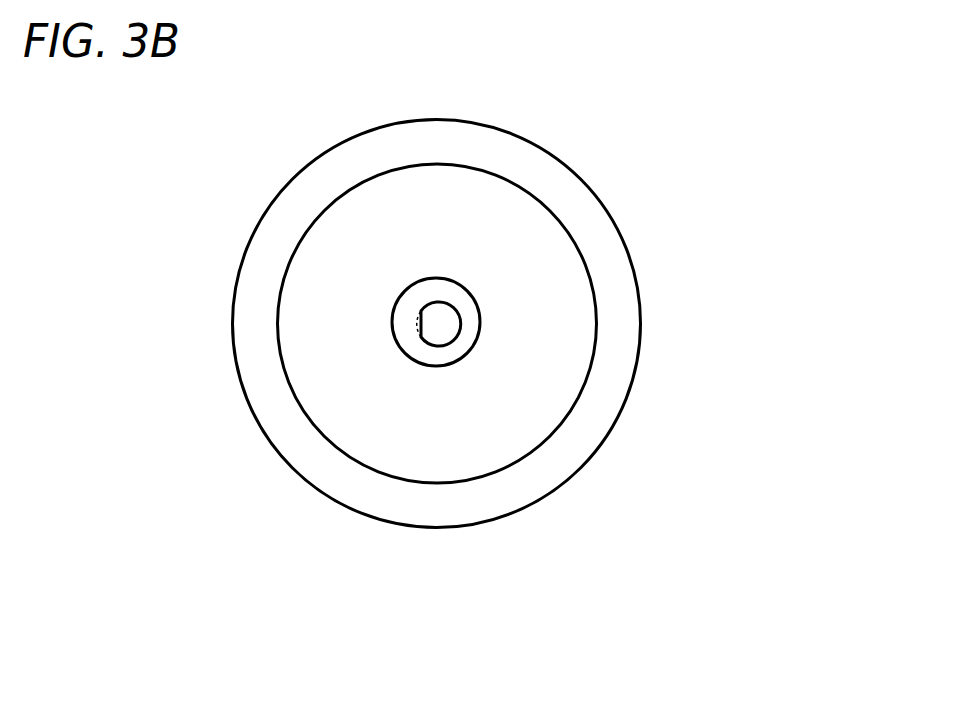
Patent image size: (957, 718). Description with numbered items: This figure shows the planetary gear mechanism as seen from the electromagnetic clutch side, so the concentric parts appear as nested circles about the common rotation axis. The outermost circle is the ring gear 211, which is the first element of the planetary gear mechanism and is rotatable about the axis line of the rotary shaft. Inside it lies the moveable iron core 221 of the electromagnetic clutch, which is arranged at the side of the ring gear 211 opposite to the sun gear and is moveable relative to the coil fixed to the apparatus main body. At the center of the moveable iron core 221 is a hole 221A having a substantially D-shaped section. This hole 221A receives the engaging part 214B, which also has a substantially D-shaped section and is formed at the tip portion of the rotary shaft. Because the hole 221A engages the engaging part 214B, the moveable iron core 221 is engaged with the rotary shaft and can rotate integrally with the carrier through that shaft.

The ring gear 211 is at (585, 199).
The moveable iron core 221 is at (572, 277).
The engaging part 214B is at (450, 323).
The hole 221A is at (430, 342).